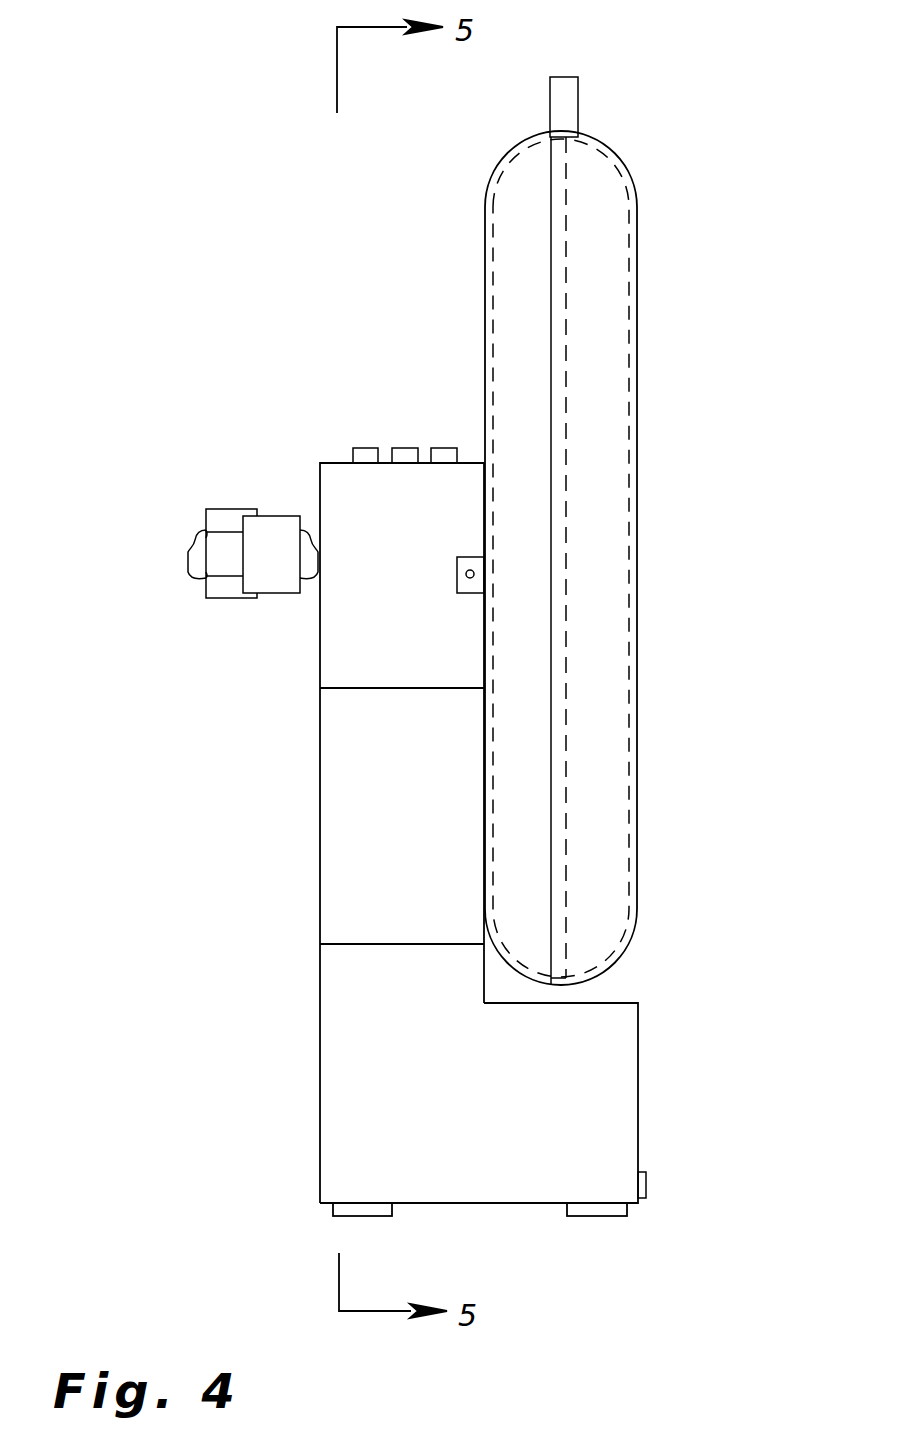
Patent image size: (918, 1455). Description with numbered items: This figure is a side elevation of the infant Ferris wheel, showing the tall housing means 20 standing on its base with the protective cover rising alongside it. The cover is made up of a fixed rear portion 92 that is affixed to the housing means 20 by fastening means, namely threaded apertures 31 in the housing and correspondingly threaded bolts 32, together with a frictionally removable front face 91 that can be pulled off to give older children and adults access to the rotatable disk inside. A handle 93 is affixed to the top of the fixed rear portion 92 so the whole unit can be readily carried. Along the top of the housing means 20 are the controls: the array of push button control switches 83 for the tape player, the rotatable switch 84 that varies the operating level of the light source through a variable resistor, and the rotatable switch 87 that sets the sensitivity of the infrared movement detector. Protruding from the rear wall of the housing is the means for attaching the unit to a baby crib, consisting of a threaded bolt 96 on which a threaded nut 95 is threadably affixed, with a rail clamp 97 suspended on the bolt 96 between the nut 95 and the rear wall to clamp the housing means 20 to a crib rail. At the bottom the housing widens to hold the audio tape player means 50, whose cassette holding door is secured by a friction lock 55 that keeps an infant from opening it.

The housing means 20 is at (312, 889).
The threaded apertures 31 is at (457, 563).
The threaded bolts 32 is at (467, 592).
The audio tape player means 50 is at (638, 1082).
The friction lock 55 is at (647, 1187).
The push button control switches 83 is at (362, 449).
The rotatable switch 84 is at (402, 455).
The rotatable switch 87 is at (445, 455).
The frictionally removable front face 91 is at (604, 168).
The fixed rear portion 92 is at (510, 186).
The handle 93 is at (568, 85).
The threaded nut 95 is at (222, 520).
The threaded bolt 96 is at (186, 553).
The rail clamp 97 is at (276, 580).